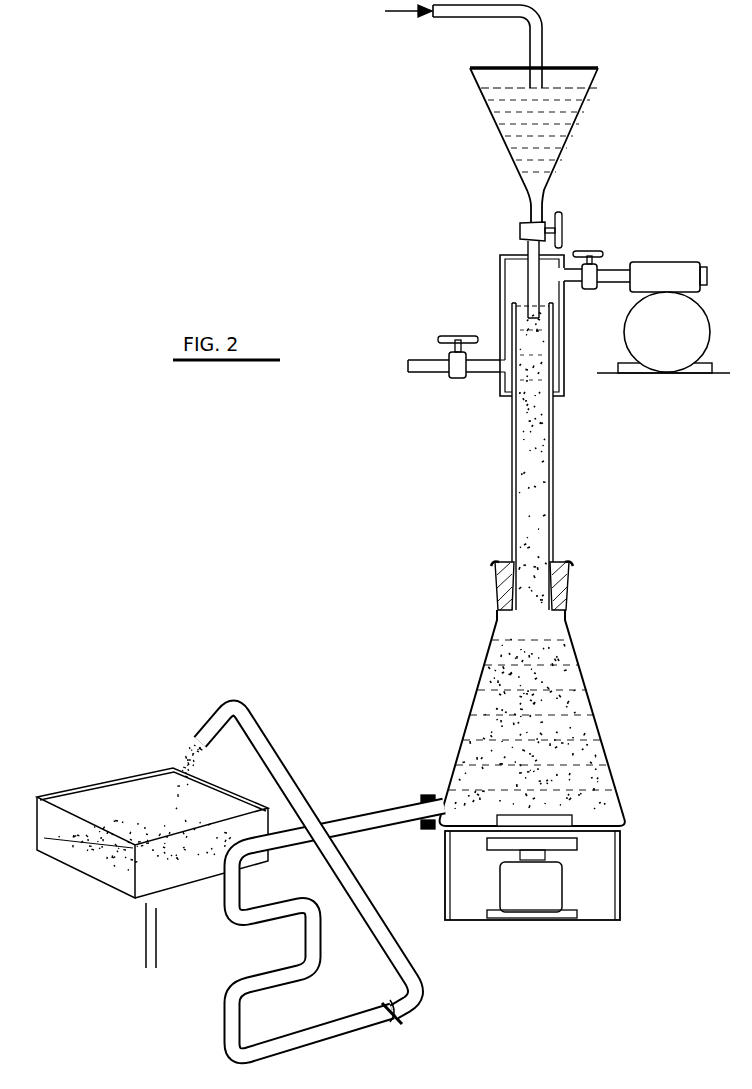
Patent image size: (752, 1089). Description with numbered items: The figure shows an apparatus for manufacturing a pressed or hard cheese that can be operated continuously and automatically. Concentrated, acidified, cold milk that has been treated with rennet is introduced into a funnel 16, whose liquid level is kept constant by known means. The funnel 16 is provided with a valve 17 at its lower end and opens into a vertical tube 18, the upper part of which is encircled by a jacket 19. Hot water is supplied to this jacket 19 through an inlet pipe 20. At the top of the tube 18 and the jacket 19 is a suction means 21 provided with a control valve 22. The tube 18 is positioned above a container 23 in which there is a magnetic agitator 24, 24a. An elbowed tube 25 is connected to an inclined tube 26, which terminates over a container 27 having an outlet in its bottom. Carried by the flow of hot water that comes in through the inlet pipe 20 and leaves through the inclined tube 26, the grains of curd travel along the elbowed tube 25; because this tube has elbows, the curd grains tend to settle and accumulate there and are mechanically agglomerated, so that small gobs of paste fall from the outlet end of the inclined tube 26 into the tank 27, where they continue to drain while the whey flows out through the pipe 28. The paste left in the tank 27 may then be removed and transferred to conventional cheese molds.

The funnel 16 is at (498, 141).
The valve 17 is at (518, 229).
The vertical tube 18 is at (511, 487).
The jacket 19 is at (500, 293).
The inlet pipe 20 is at (460, 370).
The suction means 21 is at (567, 277).
The control valve 22 is at (595, 268).
The container 23 is at (475, 694).
The magnetic agitator 24 is at (533, 890).
The magnetic agitator 24a is at (560, 820).
The elbowed tube 25 is at (367, 822).
The inclined tube 26 is at (273, 765).
The container 27 is at (133, 775).
The pipe 28 is at (146, 937).